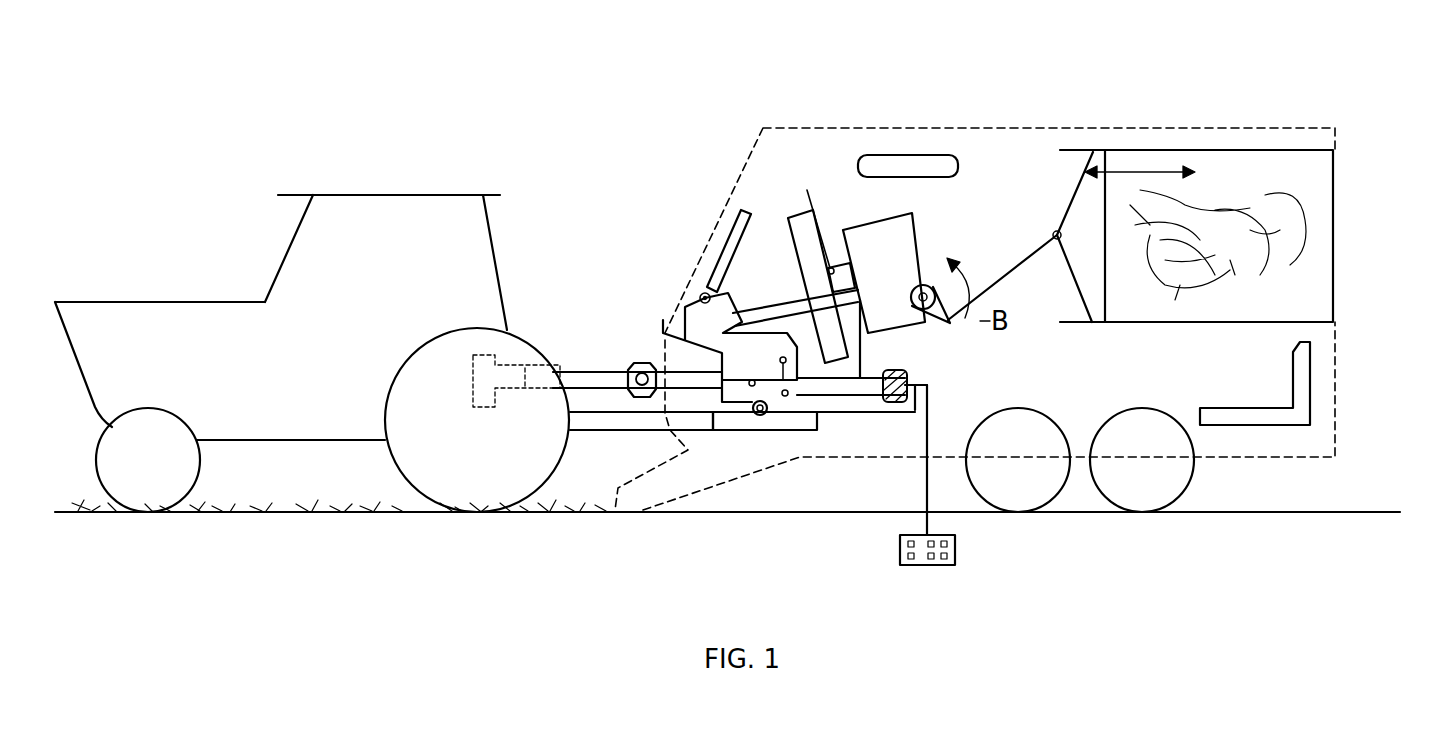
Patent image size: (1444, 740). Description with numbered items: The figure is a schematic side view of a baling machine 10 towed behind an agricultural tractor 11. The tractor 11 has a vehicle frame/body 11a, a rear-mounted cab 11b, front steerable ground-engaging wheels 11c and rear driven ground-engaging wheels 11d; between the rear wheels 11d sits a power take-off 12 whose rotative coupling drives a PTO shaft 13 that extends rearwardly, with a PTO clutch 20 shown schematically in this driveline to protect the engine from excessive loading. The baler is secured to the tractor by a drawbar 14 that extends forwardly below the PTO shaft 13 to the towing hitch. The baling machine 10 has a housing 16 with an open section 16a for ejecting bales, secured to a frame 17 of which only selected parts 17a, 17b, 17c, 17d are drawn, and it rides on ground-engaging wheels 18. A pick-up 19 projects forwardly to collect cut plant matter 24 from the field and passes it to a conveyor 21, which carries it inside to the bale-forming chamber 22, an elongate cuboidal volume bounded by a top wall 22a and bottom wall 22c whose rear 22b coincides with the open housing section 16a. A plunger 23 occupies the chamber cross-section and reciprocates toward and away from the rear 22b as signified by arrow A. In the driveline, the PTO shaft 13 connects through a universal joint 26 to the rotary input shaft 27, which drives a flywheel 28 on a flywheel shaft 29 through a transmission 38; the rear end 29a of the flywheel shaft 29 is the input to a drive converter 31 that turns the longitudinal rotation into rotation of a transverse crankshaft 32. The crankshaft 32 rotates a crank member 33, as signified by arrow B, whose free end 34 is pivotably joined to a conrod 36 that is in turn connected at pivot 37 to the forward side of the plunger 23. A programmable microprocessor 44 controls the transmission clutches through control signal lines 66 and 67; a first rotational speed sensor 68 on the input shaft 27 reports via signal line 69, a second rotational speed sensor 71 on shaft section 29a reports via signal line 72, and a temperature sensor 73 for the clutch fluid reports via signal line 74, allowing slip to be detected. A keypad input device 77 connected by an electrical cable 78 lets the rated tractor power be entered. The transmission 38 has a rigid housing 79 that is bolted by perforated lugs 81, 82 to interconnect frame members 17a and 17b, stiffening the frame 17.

The baling machine 10 is at (1264, 122).
The agricultural tractor 11 is at (465, 178).
The vehicle frame/body 11a is at (163, 320).
The rear-mounted cab 11b is at (332, 218).
The front steerable ground-engaging wheels 11c is at (163, 493).
The rear driven ground-engaging wheels 11d is at (460, 493).
The power take-off 12 is at (488, 358).
The PTO shaft 13 is at (592, 372).
The drawbar 14 is at (585, 422).
The housing 16 is at (1000, 127).
The open housing section 16a is at (1335, 167).
The baling machine frame 17 is at (945, 155).
The frame member 17a is at (742, 422).
The frame member 17b is at (738, 237).
The frame part 17c is at (887, 160).
The frame part 17d is at (1312, 385).
The ground-engaging wheels 18 is at (1015, 492).
The pick-up 19 is at (613, 515).
The PTO clutch 20 is at (520, 380).
The conveyor 21 is at (657, 490).
The bale-forming chamber 22 is at (1298, 150).
The top wall 22a is at (1170, 150).
The rear wall 22b is at (1335, 203).
The bottom wall 22c is at (1323, 317).
The plunger 23 is at (1073, 203).
The cut plant matter 24 is at (300, 513).
The universal joint 26 is at (640, 362).
The rotary input shaft 27 is at (683, 382).
The flywheel 28 is at (797, 223).
The flywheel shaft 29 is at (752, 300).
The rear end of flywheel shaft 29a is at (832, 263).
The drive converter 31 is at (853, 235).
The crankshaft 32 is at (927, 292).
The crank member 33 is at (937, 312).
The free end of crank member 34 is at (955, 321).
The conrod 36 is at (1047, 265).
The pivotable connection 37 is at (1055, 240).
The transmission 38 is at (688, 317).
The programmable microprocessor 44 is at (927, 389).
The electrical control signal line 66 is at (847, 400).
The control line 67 is at (812, 372).
The first rotational speed sensor 68 is at (717, 430).
The electrical signal line 69 is at (893, 407).
The second rotational speed sensor 71 is at (822, 225).
The electrical signal line 72 is at (862, 362).
The temperature sensor 73 is at (752, 380).
The electrical signal line 74 is at (778, 407).
The input device 77 is at (898, 552).
The electrical cable 78 is at (928, 492).
The rigid housing 79 is at (750, 330).
The perforated lug 81 is at (760, 422).
The perforated lug 82 is at (705, 292).